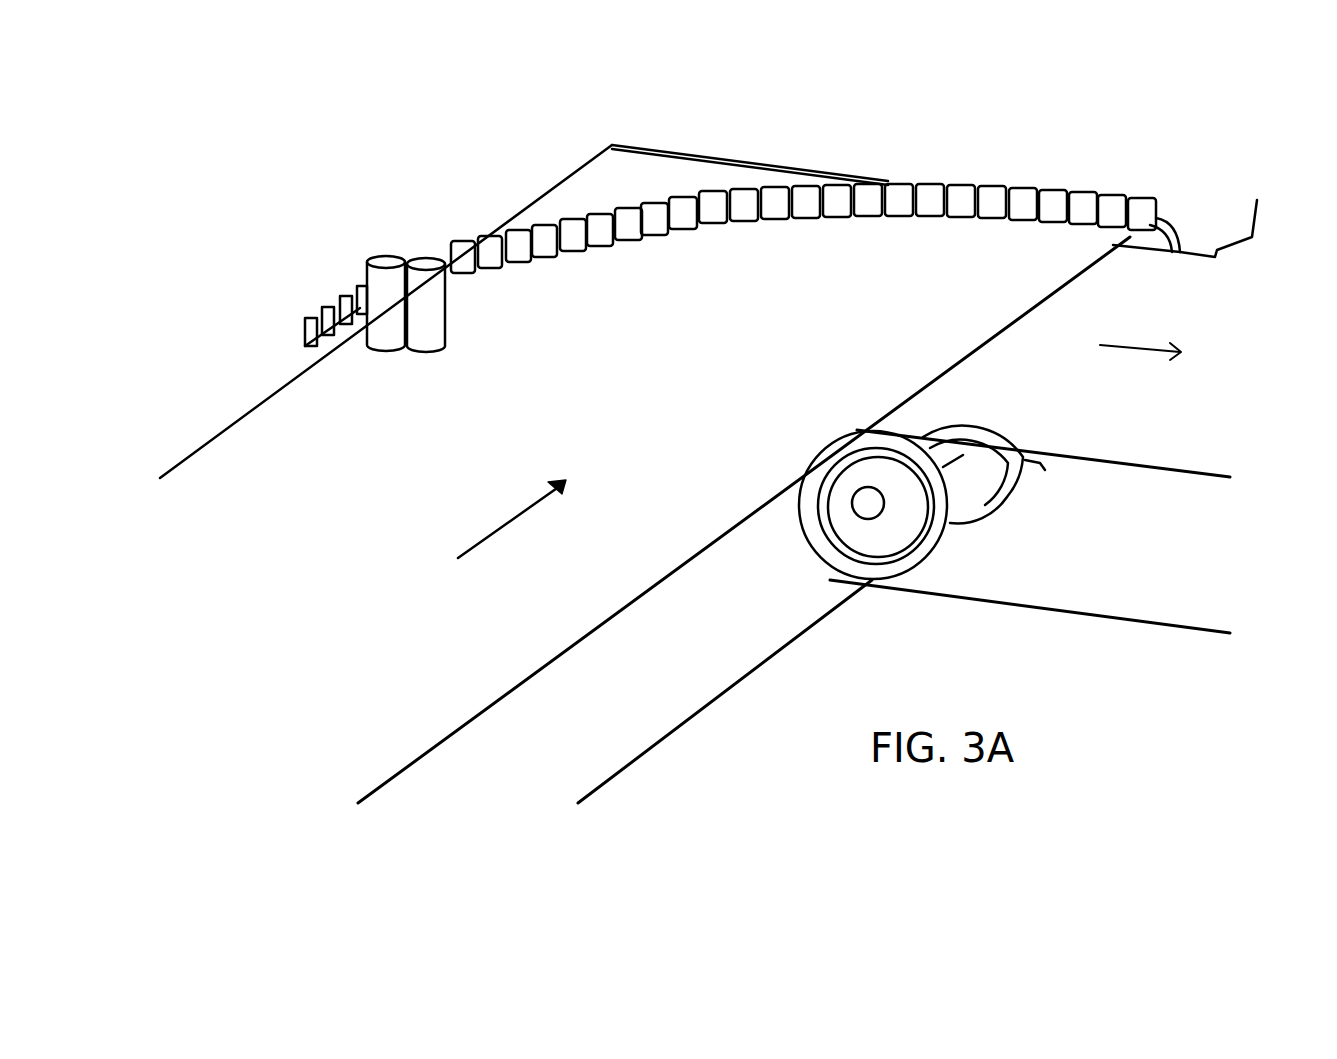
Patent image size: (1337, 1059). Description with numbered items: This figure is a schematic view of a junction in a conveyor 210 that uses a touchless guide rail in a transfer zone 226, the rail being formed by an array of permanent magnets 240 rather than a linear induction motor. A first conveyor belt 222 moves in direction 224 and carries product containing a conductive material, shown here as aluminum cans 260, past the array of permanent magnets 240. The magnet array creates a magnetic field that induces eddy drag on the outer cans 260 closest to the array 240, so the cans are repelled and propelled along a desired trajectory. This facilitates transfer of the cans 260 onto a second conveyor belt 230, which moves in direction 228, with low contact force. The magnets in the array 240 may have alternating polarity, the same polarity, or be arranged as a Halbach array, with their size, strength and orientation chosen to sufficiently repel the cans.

The conveyor 210 is at (655, 108).
The first conveyor belt 222 is at (235, 432).
The direction 224 is at (518, 508).
The transfer zone 226 is at (1090, 250).
The direction 228 is at (1104, 348).
The second conveyor belt 230 is at (1247, 214).
The array of permanent magnets 240 is at (543, 212).
The aluminum cans 260 is at (423, 353).